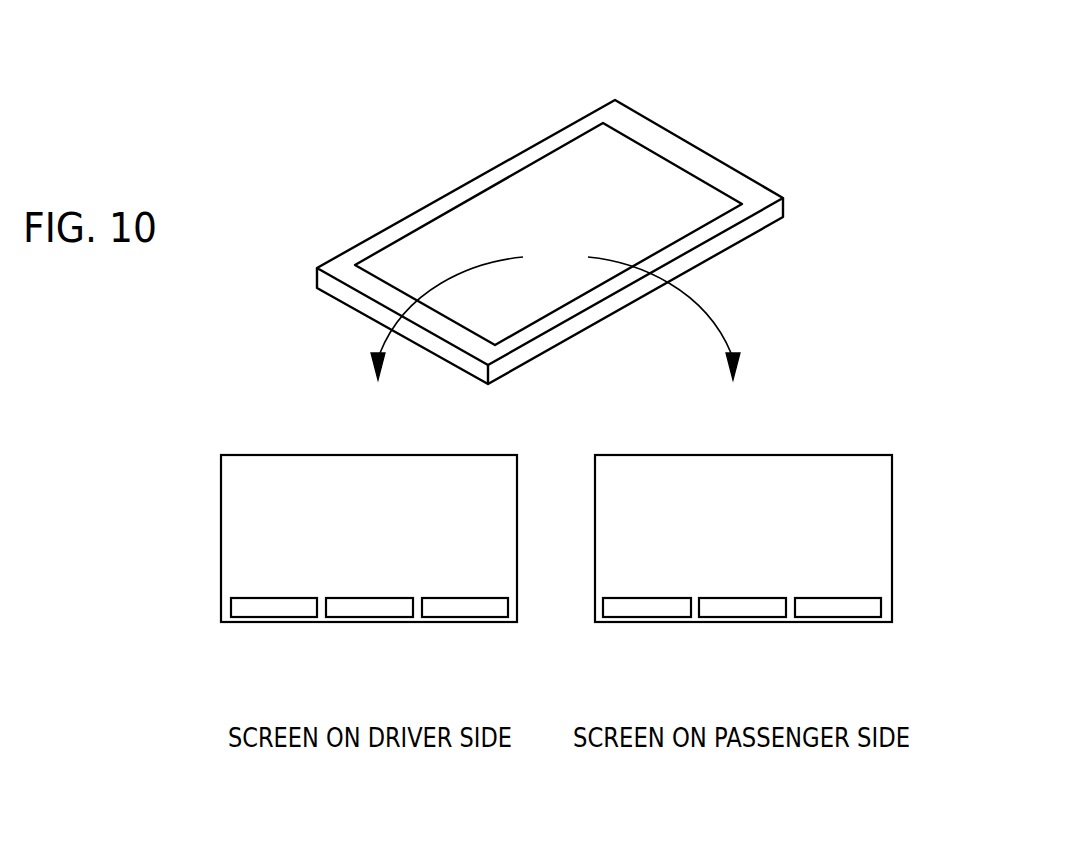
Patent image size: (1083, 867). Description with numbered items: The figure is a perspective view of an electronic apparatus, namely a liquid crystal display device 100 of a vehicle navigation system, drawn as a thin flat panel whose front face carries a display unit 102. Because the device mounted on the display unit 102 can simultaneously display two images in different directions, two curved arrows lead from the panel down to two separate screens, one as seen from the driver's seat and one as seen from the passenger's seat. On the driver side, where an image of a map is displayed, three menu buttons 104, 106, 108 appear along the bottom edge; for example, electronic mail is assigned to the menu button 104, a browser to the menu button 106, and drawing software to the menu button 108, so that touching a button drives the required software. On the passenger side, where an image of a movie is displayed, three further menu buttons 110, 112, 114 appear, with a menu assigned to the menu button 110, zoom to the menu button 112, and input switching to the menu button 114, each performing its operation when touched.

The liquid crystal display device 100 is at (728, 88).
The display unit 102 is at (482, 218).
The menu button 104 is at (273, 610).
The menu button 106 is at (371, 607).
The menu button 108 is at (465, 608).
The menu button 110 is at (648, 608).
The menu button 112 is at (743, 607).
The menu button 114 is at (838, 607).